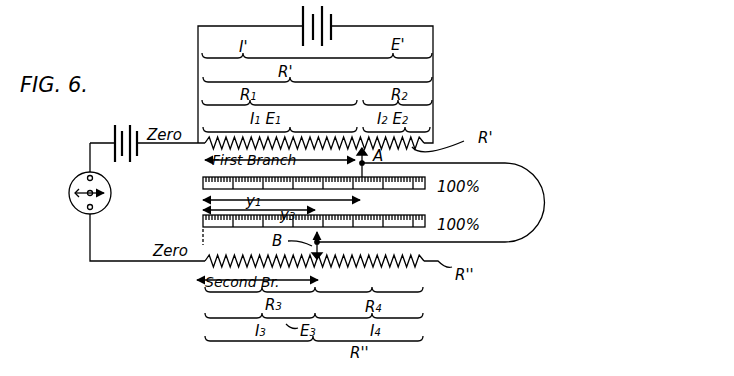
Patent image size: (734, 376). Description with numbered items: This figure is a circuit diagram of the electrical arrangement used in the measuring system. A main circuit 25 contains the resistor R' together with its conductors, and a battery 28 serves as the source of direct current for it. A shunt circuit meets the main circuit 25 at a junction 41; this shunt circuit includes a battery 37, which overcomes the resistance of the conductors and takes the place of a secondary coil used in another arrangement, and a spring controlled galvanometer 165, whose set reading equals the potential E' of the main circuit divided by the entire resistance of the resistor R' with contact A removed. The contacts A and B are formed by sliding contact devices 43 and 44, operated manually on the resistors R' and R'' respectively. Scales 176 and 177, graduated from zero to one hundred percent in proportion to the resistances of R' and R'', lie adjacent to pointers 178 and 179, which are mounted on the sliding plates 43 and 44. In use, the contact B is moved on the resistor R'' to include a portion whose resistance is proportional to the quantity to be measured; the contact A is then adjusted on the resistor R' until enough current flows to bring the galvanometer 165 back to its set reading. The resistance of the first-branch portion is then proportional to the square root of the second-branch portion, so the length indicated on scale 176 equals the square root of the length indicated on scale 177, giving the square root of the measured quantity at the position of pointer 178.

The main circuit 25 is at (431, 39).
The battery 28 is at (303, 23).
The battery 37 is at (113, 140).
The junction 41 is at (194, 147).
The sliding contact device 43 is at (366, 167).
The sliding contact device 44 is at (322, 255).
The spring controlled galvanometer 165 is at (77, 186).
The scale 176 is at (420, 191).
The scale 177 is at (425, 229).
The pointer 178 is at (360, 166).
The pointer 179 is at (320, 241).